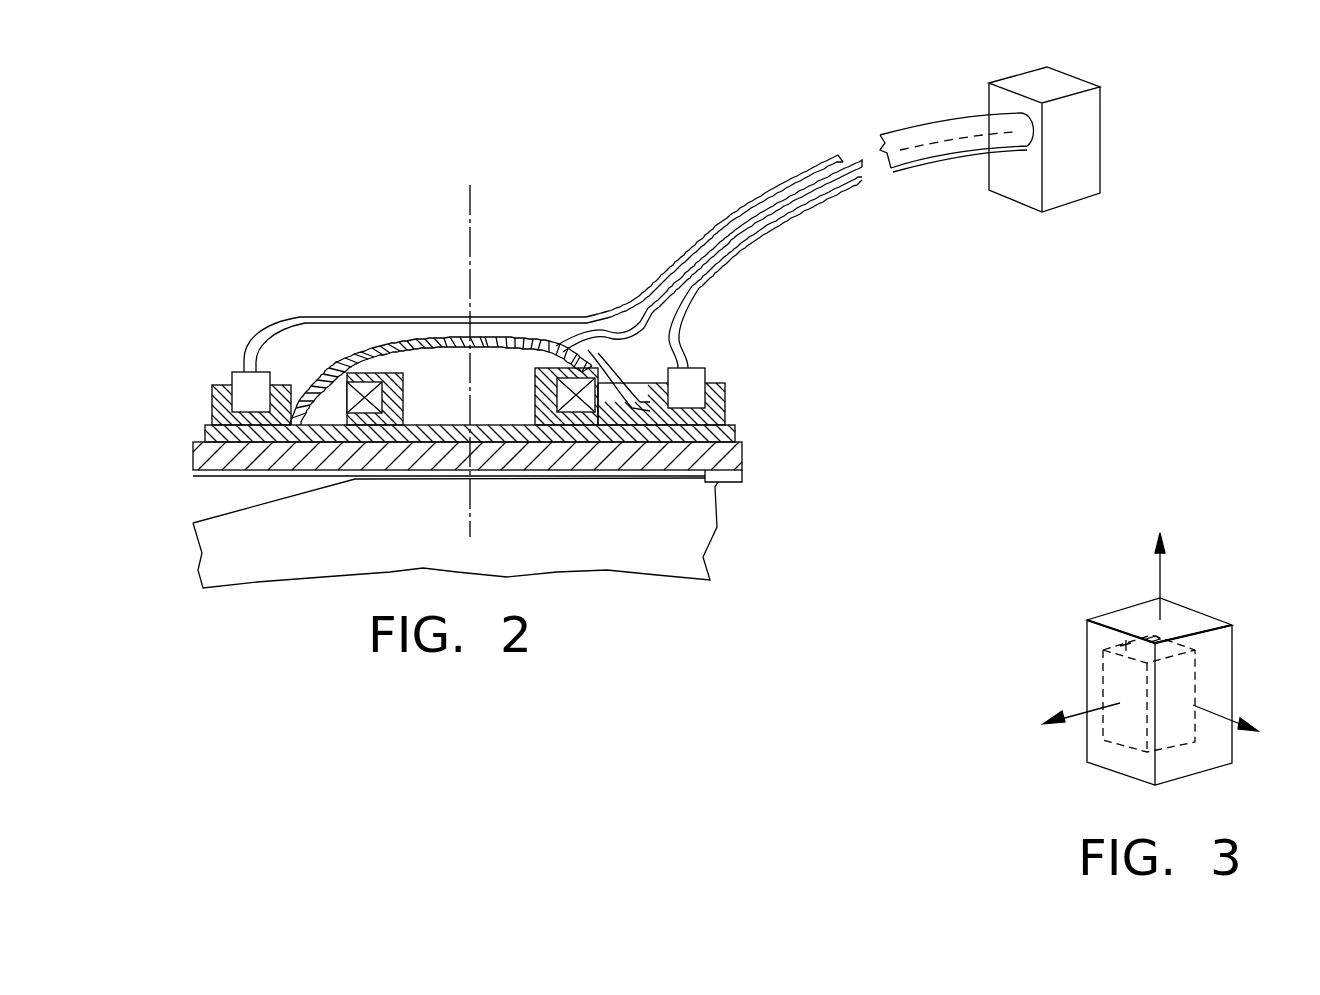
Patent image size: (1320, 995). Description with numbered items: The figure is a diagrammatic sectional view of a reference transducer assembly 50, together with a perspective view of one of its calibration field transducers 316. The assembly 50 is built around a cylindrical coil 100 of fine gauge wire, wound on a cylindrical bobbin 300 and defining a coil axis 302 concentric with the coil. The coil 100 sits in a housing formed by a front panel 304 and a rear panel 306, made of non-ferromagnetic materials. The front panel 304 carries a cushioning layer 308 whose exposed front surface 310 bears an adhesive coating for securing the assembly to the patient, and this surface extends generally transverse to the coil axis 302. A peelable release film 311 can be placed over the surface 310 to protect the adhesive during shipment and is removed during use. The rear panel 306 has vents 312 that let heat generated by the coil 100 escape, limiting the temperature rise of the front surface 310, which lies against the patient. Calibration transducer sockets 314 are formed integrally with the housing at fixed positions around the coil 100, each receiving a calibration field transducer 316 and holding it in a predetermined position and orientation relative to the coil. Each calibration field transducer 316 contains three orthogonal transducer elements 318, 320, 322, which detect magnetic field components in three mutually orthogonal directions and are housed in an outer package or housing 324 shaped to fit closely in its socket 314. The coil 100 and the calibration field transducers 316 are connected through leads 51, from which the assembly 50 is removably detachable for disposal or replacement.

In FIG. 2, the reference transducer assembly 50 is at (238, 258).
In FIG. 2, the leads 51 is at (836, 156).
In FIG. 2, the cylindrical coil 100 is at (328, 432).
In FIG. 2, the cylindrical bobbin 300 is at (405, 405).
In FIG. 2, the coil axis 302 is at (480, 226).
In FIG. 2, the front panel 304 is at (742, 432).
In FIG. 2, the rear panel 306 is at (390, 345).
In FIG. 2, the cushioning layer 308 is at (530, 456).
In FIG. 2, the front surface 310 is at (746, 480).
In FIG. 2, the peelable release film 311 is at (222, 510).
In FIG. 2, the vents 312 is at (438, 337).
In FIG. 2, the calibration transducer sockets 314 is at (211, 392).
In FIG. 2, the calibration field transducer 316 is at (239, 370).
In FIG. 3, the calibration field transducer 316 is at (1204, 614).
In FIG. 3, the transducer element 318 is at (1190, 667).
In FIG. 3, the transducer element 320 is at (1124, 632).
In FIG. 3, the transducer element 322 is at (1103, 666).
In FIG. 3, the outer package or housing 324 is at (1133, 606).